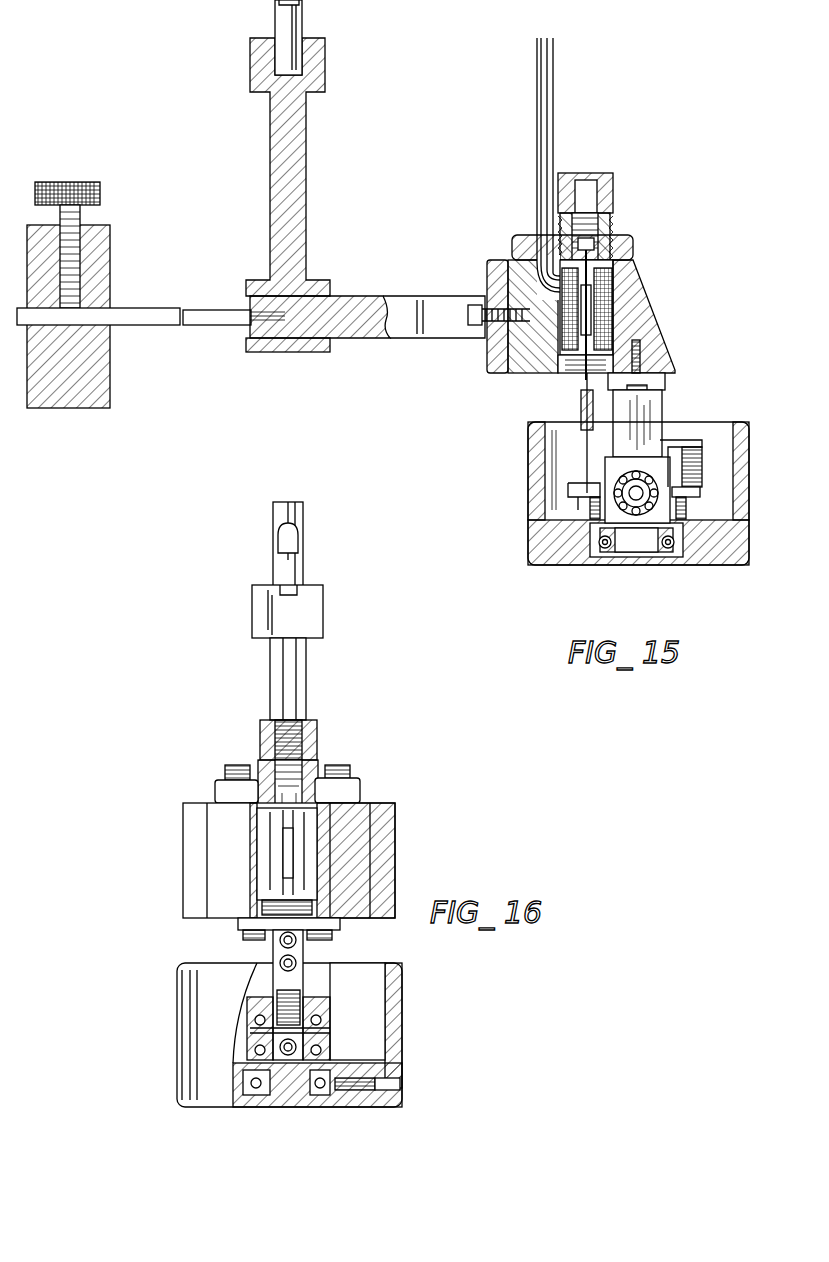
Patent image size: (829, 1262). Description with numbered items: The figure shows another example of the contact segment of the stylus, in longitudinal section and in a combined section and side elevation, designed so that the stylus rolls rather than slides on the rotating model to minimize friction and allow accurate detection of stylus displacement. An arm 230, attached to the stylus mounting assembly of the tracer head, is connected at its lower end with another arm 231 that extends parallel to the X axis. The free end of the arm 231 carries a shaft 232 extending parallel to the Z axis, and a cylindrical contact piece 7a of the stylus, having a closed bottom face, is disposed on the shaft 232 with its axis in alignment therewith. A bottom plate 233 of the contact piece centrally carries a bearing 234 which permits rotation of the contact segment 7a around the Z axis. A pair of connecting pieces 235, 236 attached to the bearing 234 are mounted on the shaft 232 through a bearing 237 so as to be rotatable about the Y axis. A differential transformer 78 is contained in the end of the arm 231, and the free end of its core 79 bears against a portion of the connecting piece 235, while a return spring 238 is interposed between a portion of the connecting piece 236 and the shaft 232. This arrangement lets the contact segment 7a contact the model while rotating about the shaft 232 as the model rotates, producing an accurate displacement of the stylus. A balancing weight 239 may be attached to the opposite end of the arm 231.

In FIG. 15, the contact segment 7a is at (528, 488).
In FIG. 16, the contact segment 7a is at (177, 1000).
In FIG. 15, the differential transformer 78 is at (612, 313).
In FIG. 16, the differential transformer 78 is at (268, 840).
In FIG. 15, the core 79 is at (580, 382).
In FIG. 15, the arm 230 is at (305, 180).
In FIG. 16, the arm 230 is at (306, 687).
In FIG. 15, the arm 231 is at (400, 296).
In FIG. 15, the shaft 232 is at (650, 414).
In FIG. 15, the bottom plate 233 is at (726, 546).
In FIG. 16, the bottom plate 233 is at (370, 1100).
In FIG. 15, the bearing 234 is at (665, 558).
In FIG. 16, the bearing 234 is at (318, 1100).
In FIG. 15, the connecting piece 235 is at (578, 487).
In FIG. 15, the connecting piece 236 is at (690, 497).
In FIG. 16, the connecting piece 236 is at (300, 1030).
In FIG. 15, the bearing 237 is at (638, 515).
In FIG. 16, the bearing 237 is at (325, 1015).
In FIG. 15, the return spring 238 is at (700, 460).
In FIG. 16, the return spring 238 is at (295, 990).
In FIG. 15, the balancing weight 239 is at (110, 286).